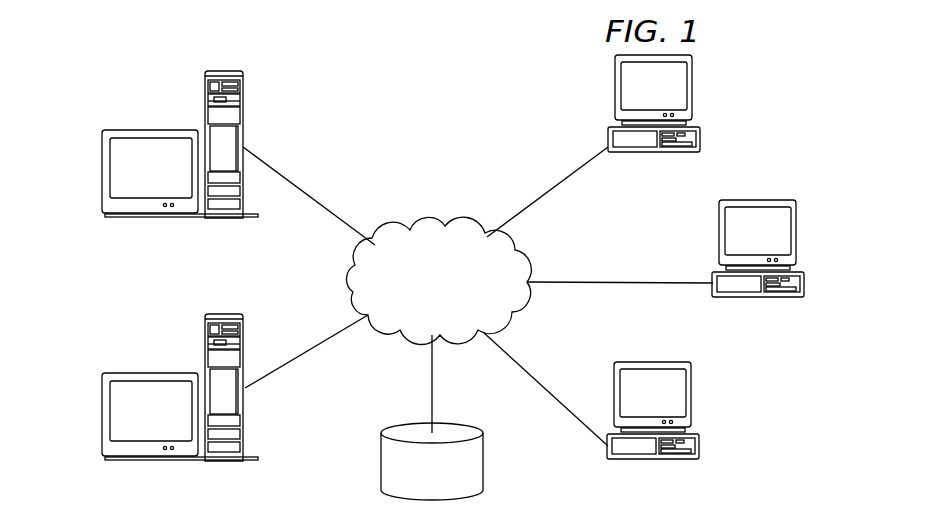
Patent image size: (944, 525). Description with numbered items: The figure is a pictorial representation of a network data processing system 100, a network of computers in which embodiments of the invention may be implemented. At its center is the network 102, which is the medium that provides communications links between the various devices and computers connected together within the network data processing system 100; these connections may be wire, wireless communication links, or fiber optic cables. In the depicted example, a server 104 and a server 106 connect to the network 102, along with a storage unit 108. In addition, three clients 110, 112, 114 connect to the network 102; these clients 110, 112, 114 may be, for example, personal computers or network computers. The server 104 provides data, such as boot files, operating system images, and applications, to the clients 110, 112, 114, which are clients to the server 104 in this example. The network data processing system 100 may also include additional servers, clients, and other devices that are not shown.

The network data processing system 100 is at (323, 68).
The network 102 is at (423, 308).
The server 104 is at (205, 89).
The server 106 is at (102, 415).
The storage unit 108 is at (381, 462).
The client 110 is at (694, 97).
The client 112 is at (800, 237).
The client 114 is at (693, 400).